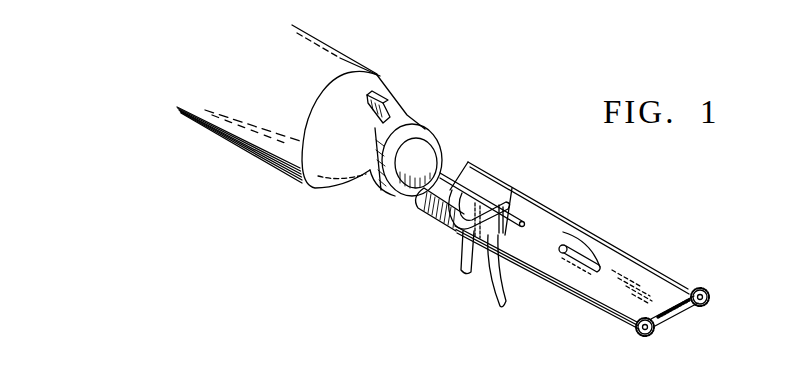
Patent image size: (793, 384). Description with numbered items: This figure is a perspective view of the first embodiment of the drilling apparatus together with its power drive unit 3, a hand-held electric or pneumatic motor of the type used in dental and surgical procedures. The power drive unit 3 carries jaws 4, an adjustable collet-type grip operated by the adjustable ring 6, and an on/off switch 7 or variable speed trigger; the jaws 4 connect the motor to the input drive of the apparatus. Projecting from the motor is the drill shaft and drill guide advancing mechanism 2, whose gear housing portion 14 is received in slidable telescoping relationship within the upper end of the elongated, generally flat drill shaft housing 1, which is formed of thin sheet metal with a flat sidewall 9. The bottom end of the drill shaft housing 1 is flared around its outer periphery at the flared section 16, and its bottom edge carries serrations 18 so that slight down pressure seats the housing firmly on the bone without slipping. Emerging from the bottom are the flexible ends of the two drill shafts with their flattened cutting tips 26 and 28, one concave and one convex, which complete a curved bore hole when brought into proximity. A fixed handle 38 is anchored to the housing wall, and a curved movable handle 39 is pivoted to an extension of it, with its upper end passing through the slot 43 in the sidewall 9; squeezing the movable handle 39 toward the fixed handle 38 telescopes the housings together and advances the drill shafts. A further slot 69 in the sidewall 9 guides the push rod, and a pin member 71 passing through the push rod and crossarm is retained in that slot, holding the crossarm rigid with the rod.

The drill shaft housing 1 is at (545, 156).
The drill shaft and drill guide advancing mechanism 2 is at (383, 150).
The power drive unit 3 is at (392, 51).
The jaws 4 is at (425, 180).
The adjustable ring 6 is at (373, 182).
The on/off switch 7 is at (386, 112).
The sidewall 9 is at (582, 287).
The gear housing portion 14 is at (500, 180).
The flared section 16 is at (690, 287).
The serrations 18 is at (632, 323).
The cutting tip 26 is at (708, 296).
The cutting tip 28 is at (650, 335).
The fixed handle 38 is at (461, 272).
The movable handle 39 is at (491, 288).
The slot 43 is at (520, 226).
The slot 69 is at (592, 259).
The pin member 71 is at (573, 235).